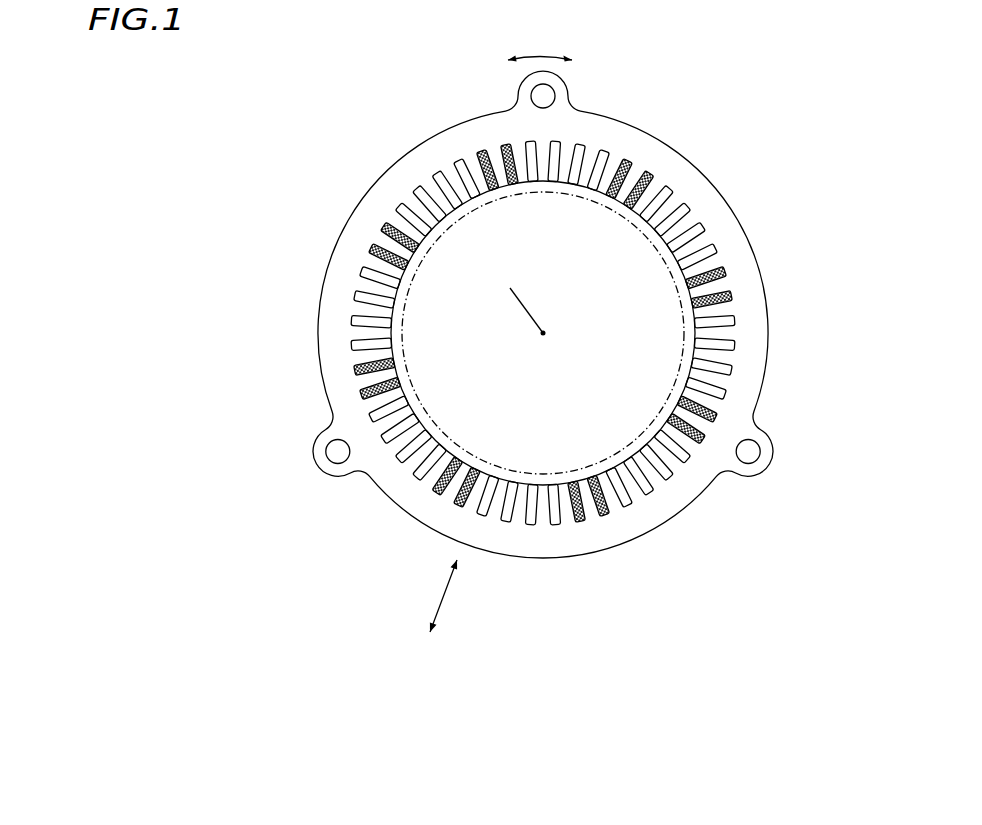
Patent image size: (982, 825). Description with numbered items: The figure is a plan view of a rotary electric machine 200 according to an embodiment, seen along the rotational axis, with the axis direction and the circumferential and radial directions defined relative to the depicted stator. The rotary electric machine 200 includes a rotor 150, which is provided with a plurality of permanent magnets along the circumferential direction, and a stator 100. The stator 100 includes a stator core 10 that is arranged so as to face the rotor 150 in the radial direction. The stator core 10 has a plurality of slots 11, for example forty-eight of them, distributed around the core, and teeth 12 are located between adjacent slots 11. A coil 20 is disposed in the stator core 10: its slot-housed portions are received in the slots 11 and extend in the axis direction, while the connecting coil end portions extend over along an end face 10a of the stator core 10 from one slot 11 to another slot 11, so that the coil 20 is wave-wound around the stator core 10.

The rotary electric machine 200 is at (270, 84).
The stator 100 is at (745, 168).
The stator core 10 is at (763, 293).
The end face of stator core 10a is at (753, 322).
The slot 11 is at (628, 488).
The tooth 12 is at (652, 467).
The coil 20 is at (628, 160).
The rotor 150 is at (432, 192).